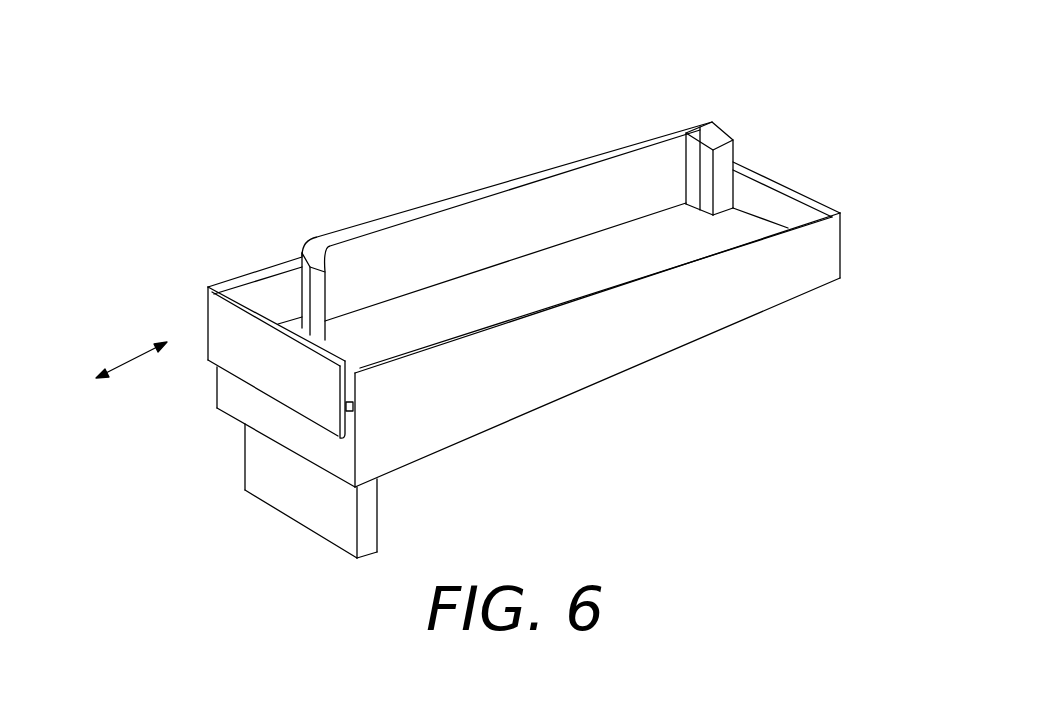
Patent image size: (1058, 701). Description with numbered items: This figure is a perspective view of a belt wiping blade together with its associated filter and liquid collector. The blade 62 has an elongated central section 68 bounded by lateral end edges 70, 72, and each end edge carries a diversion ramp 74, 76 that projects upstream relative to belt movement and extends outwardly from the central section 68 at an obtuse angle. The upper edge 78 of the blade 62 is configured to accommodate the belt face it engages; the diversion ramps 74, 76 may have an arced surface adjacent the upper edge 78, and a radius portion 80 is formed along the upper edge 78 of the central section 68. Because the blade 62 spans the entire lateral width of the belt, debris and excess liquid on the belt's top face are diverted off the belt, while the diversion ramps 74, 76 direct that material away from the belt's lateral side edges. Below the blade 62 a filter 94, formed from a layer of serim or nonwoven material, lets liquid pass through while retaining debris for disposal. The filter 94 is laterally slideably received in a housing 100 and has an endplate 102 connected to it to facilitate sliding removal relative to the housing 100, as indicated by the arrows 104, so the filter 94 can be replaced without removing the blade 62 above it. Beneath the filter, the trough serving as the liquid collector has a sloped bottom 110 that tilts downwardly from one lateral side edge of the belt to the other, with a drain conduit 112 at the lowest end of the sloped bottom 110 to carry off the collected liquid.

The blade 62 is at (479, 174).
The elongated central section 68 is at (523, 237).
The lateral end edge 70 is at (303, 295).
The lateral end edge 72 is at (740, 135).
The diversion ramp 74 is at (322, 298).
The diversion ramp 76 is at (727, 183).
The upper edge 78 is at (438, 205).
The radius portion 80 is at (695, 125).
The filter 94 is at (757, 225).
The housing 100 is at (823, 252).
The endplate 102 is at (227, 353).
The arrows 104 is at (132, 352).
The sloped bottom 110 is at (607, 377).
The drain conduit 112 is at (375, 530).